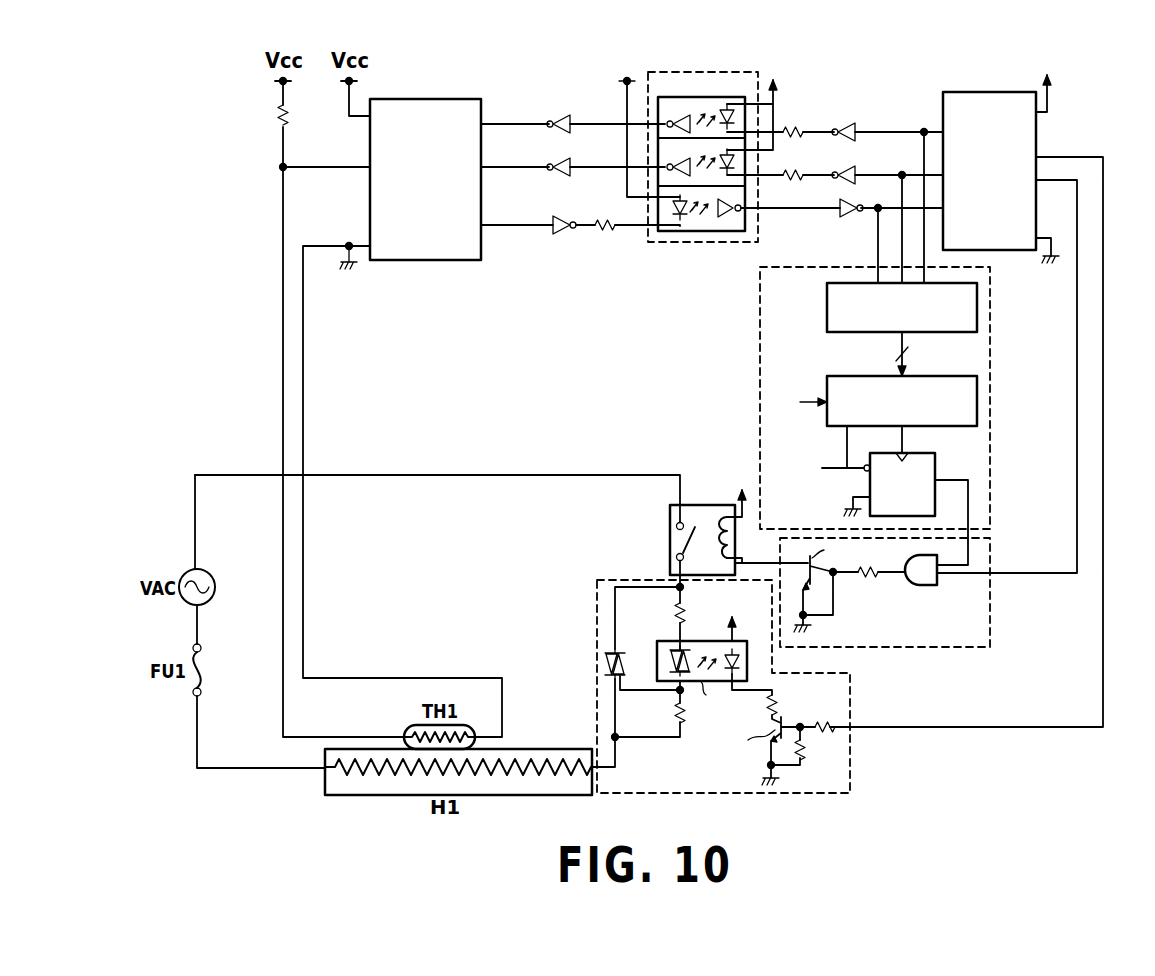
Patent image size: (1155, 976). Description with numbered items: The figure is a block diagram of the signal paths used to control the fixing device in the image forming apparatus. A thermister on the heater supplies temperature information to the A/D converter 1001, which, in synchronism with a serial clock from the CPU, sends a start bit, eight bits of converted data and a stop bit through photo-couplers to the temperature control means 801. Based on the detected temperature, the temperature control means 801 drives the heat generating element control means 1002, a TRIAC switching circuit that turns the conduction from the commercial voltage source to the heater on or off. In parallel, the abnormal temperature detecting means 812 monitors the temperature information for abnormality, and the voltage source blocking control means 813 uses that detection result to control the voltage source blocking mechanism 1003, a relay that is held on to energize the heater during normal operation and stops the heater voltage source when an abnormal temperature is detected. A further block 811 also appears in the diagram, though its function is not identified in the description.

The A/D converter 1001 is at (415, 99).
The photocoupler isolation section 811 is at (668, 72).
The temperature control means 801 is at (950, 92).
The abnormal temperature detecting means 812 is at (990, 408).
The voltage source blocking control means 813 is at (990, 617).
The voltage source blocking mechanism 1003 is at (670, 541).
The heat generating element control means 1002 is at (850, 764).